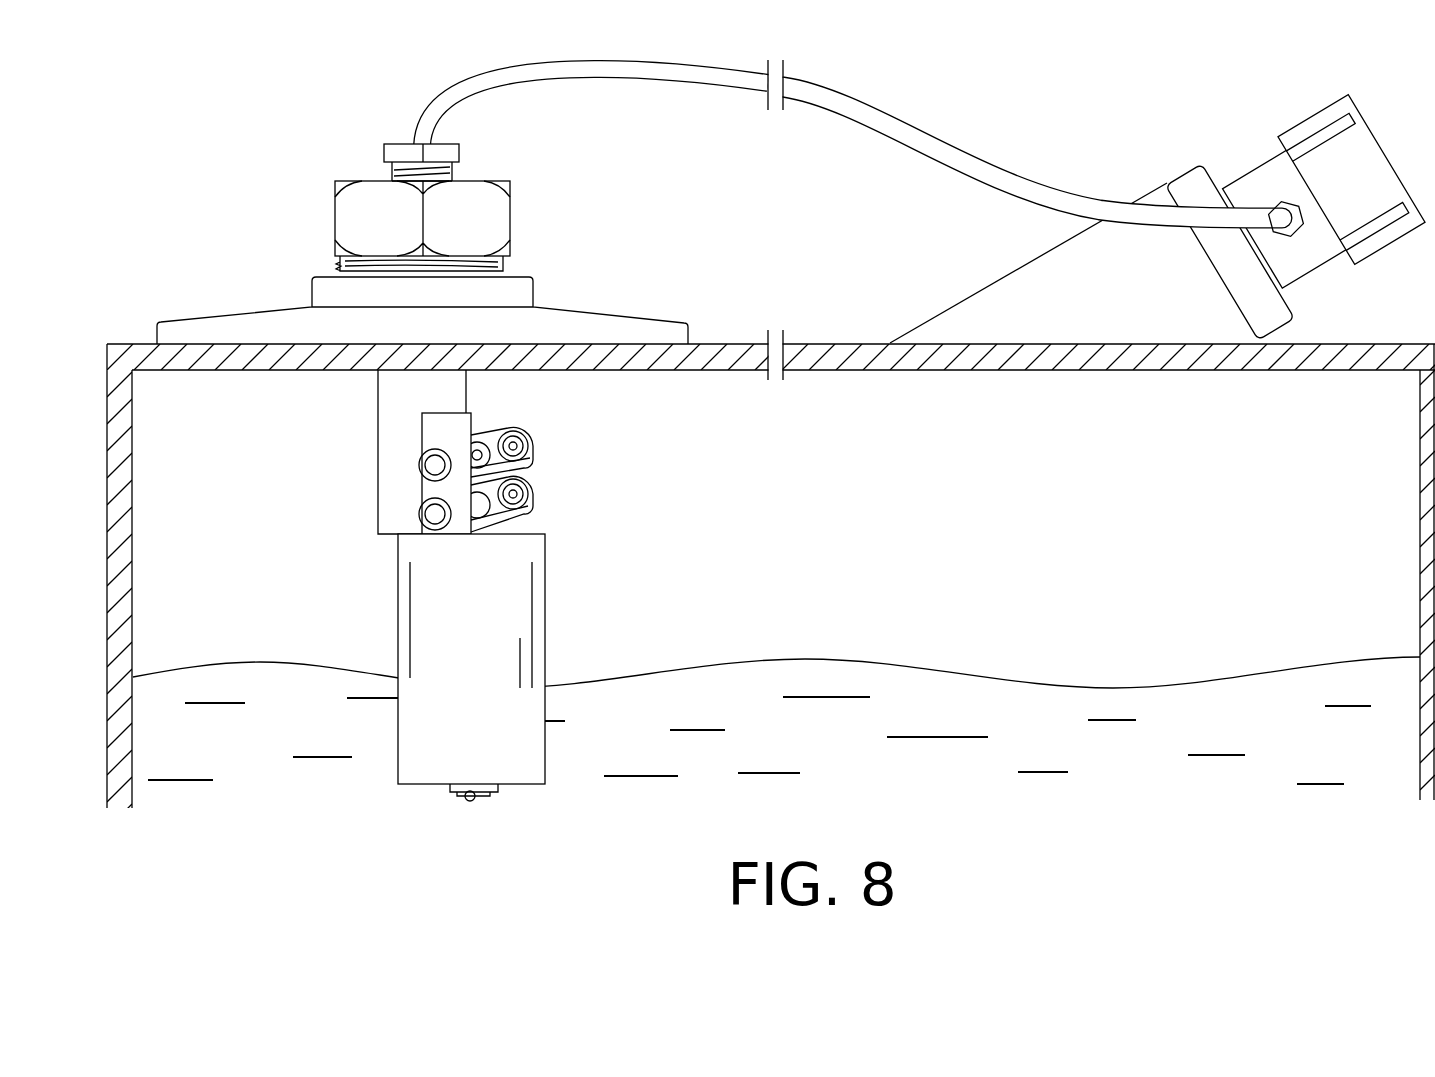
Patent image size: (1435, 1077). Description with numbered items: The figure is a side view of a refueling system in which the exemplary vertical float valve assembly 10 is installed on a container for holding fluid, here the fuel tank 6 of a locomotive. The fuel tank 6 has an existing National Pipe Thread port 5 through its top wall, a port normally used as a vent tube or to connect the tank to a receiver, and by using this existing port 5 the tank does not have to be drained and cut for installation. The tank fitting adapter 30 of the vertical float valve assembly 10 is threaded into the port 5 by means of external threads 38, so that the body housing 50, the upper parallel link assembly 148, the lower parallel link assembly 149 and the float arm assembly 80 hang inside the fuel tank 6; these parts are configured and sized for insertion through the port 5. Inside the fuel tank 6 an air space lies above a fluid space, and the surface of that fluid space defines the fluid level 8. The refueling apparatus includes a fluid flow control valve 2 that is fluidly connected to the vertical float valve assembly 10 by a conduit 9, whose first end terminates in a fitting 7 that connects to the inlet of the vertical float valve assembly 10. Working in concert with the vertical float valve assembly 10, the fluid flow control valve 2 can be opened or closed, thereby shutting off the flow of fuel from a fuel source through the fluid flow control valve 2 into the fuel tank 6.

The fluid flow control valve 2 is at (1237, 135).
The NPT port 5 is at (556, 315).
The fuel tank 6 is at (804, 350).
The fitting 7 is at (398, 144).
The fluid level 8 is at (798, 659).
The conduit 9 is at (803, 88).
The vertical float valve assembly 10 is at (418, 454).
The fitting adapter 30 is at (350, 214).
The external threads 38 is at (338, 265).
The body housing 50 is at (390, 460).
The float arm assembly 80 is at (366, 578).
The upper parallel link assembly 148 is at (515, 462).
The lower parallel link assembly 149 is at (505, 507).